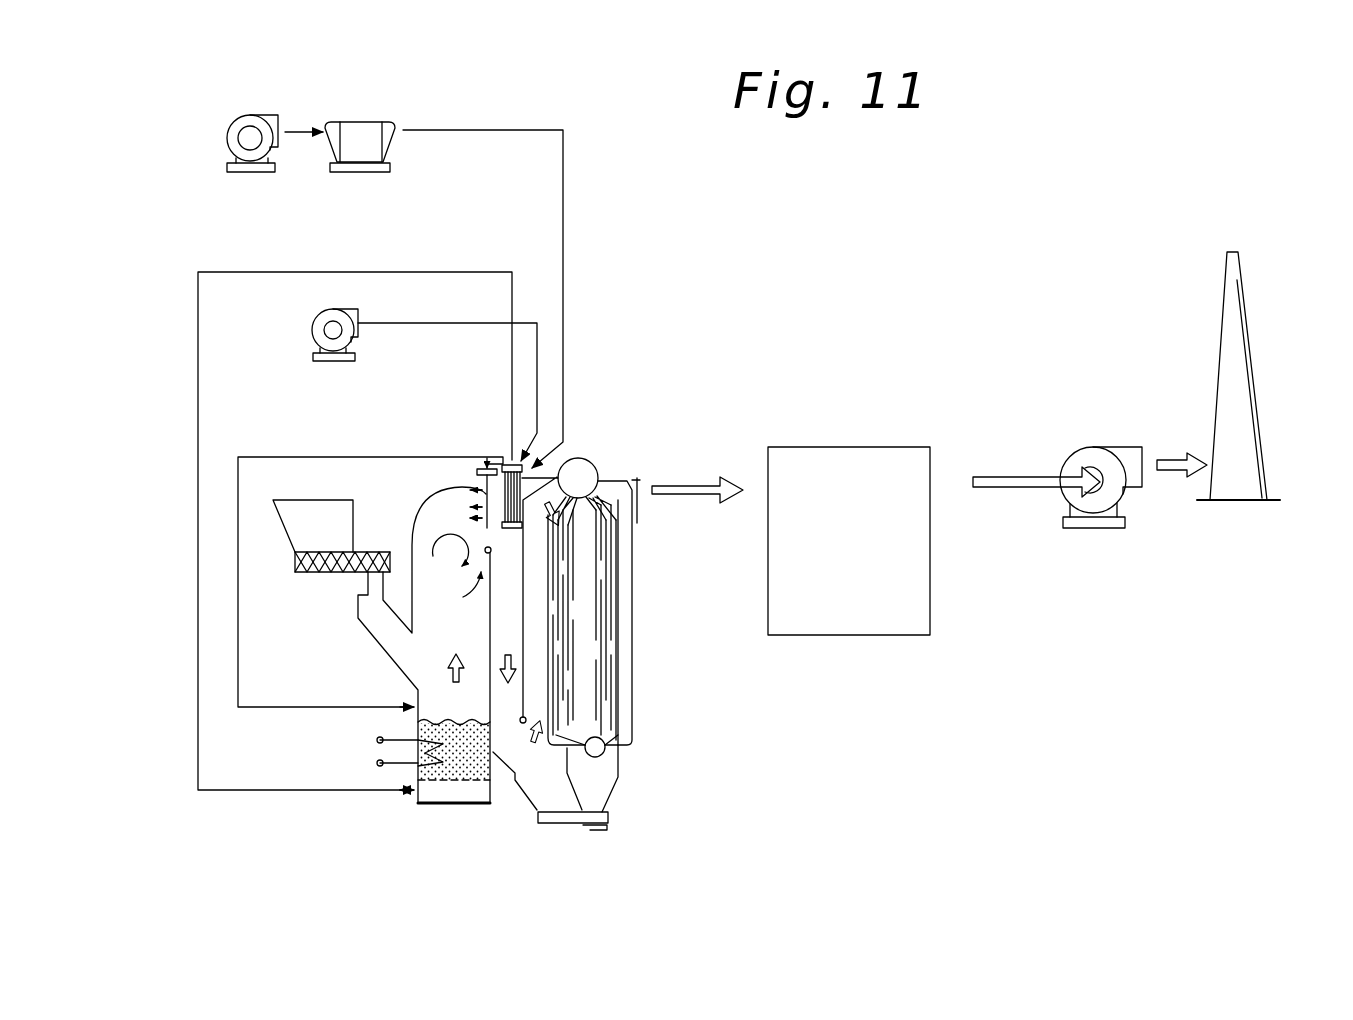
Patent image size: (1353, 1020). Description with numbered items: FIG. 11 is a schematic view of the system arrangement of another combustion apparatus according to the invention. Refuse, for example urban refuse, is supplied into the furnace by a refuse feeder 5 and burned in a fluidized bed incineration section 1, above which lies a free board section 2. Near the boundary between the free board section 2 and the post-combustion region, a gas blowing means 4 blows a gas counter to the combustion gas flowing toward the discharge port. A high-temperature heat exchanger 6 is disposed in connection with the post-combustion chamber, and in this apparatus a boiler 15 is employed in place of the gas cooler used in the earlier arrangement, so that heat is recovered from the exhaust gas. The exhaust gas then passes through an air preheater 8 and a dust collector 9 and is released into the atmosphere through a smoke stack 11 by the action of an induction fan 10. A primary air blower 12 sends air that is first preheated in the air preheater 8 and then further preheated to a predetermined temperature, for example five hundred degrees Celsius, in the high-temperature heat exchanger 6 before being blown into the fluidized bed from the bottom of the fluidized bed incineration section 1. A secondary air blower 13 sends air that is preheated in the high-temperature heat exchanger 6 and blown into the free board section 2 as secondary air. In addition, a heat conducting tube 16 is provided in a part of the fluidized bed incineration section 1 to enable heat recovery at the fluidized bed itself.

The fluidized bed incineration section 1 is at (463, 765).
The free board section 2 is at (418, 652).
The gas blowing means 4 is at (468, 497).
The refuse feeder 5 is at (338, 517).
The high-temperature heat exchanger 6 is at (547, 472).
The air preheater 8 is at (370, 125).
The dust collector 9 is at (870, 457).
The induction fan 10 is at (1113, 457).
The smoke stack 11 is at (1257, 397).
The primary air blower 12 is at (266, 125).
The secondary air blower 13 is at (343, 313).
The boiler 15 is at (623, 633).
The heat conducting tube 16 is at (397, 765).